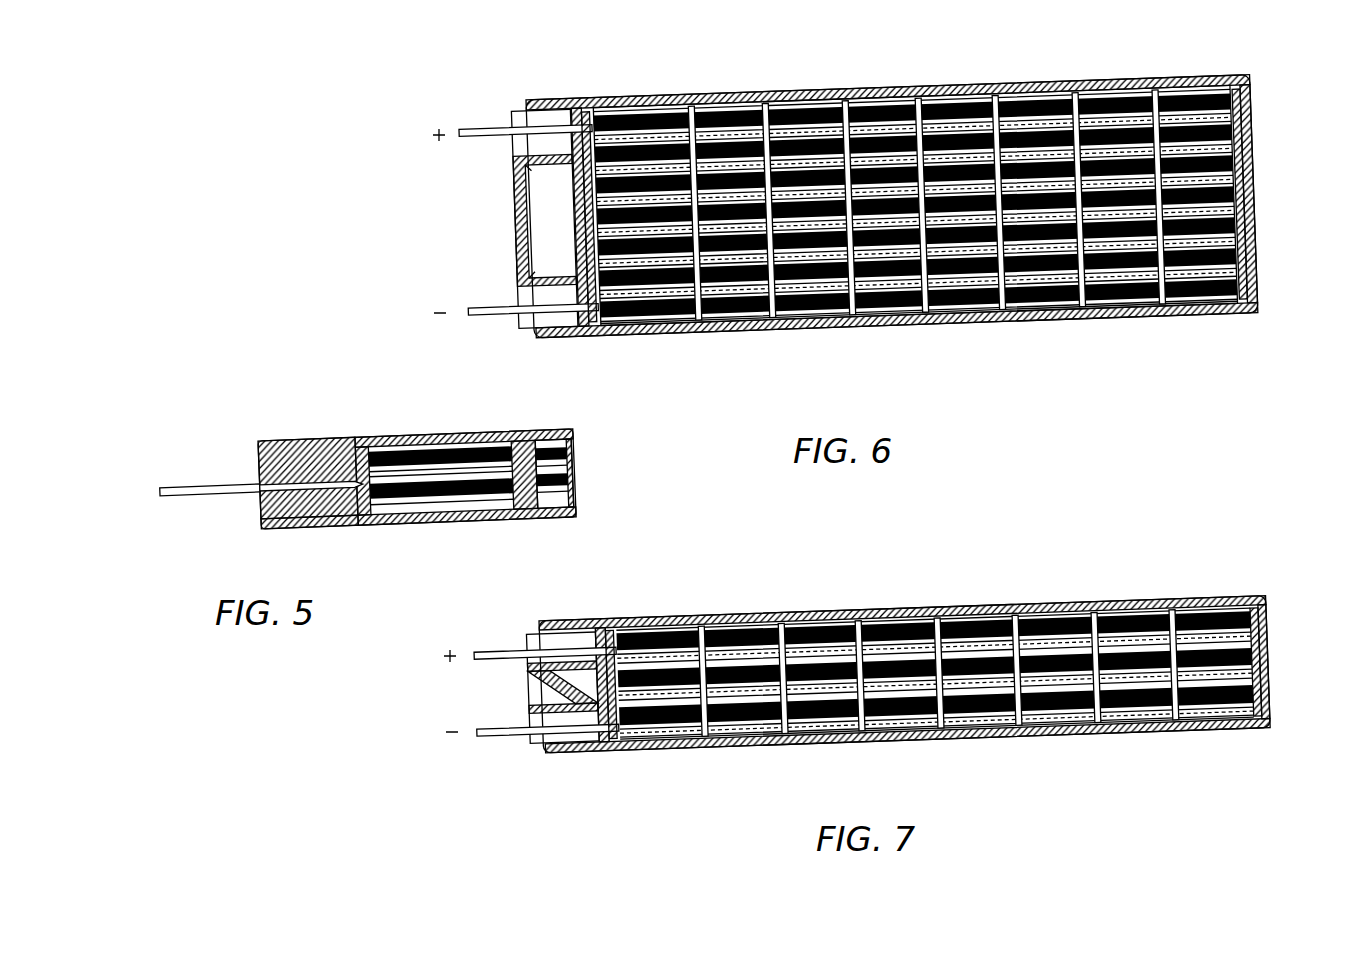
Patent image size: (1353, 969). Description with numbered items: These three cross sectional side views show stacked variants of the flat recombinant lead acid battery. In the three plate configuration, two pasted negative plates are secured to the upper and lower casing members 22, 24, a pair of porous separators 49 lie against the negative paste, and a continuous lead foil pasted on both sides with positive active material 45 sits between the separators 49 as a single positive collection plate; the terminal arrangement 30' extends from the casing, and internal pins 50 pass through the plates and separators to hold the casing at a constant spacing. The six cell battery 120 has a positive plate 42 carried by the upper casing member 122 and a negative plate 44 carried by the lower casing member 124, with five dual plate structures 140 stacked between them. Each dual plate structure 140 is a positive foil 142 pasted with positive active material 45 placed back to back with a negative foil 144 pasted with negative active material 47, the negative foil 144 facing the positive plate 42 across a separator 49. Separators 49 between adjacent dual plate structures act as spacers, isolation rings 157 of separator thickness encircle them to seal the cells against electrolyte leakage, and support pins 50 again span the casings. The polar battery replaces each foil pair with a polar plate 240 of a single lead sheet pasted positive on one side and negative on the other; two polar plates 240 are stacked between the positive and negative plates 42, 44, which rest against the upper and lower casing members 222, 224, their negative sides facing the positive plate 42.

In FIG. 5, the upper casing member 22 is at (308, 432).
In FIG. 5, the lower casing member 24 is at (283, 517).
In FIG. 5, the terminal lead 30' is at (261, 527).
In FIG. 6, the positive plate 42 is at (1122, 77).
In FIG. 7, the positive plate 42 is at (1110, 598).
In FIG. 5, the positive plate 42 is at (537, 423).
In FIG. 6, the negative plate 44 is at (1050, 303).
In FIG. 7, the negative plate 44 is at (1157, 725).
In FIG. 5, the negative plate 44 is at (437, 432).
In FIG. 6, the positive active material 45 is at (1248, 232).
In FIG. 7, the positive active material 45 is at (636, 630).
In FIG. 5, the positive active material 45 is at (563, 463).
In FIG. 6, the negative active material 47 is at (1248, 212).
In FIG. 7, the negative active material 47 is at (630, 722).
In FIG. 5, the negative active material 47 is at (473, 448).
In FIG. 6, the separator 49 is at (1248, 278).
In FIG. 7, the separator 49 is at (1260, 597).
In FIG. 5, the separator 49 is at (410, 450).
In FIG. 6, the pins 50 is at (756, 98).
In FIG. 7, the pins 50 is at (712, 612).
In FIG. 5, the pins 50 is at (517, 480).
In FIG. 6, the battery 120 is at (830, 66).
In FIG. 6, the upper casing member 122 is at (926, 82).
In FIG. 6, the lower casing member 124 is at (1130, 302).
In FIG. 6, the dual plate structure 140 is at (1248, 150).
In FIG. 6, the positive foil 142 is at (1245, 110).
In FIG. 6, the negative foil 144 is at (1250, 80).
In FIG. 6, the isolation rings 157 is at (1248, 195).
In FIG. 7, the upper casing member 222 is at (835, 603).
In FIG. 7, the lower casing member 224 is at (957, 728).
In FIG. 7, the polar plate 240 is at (1262, 623).